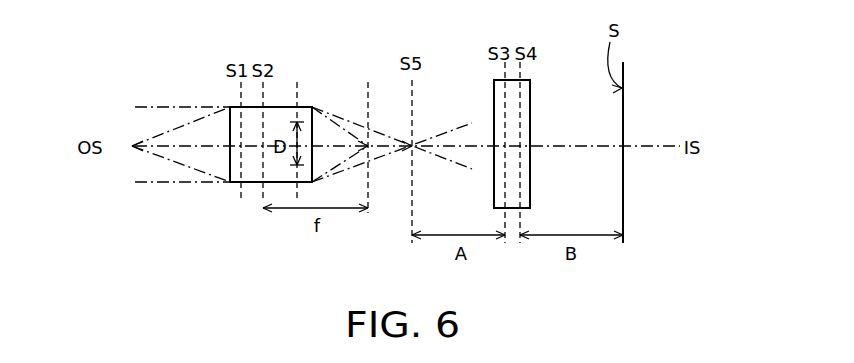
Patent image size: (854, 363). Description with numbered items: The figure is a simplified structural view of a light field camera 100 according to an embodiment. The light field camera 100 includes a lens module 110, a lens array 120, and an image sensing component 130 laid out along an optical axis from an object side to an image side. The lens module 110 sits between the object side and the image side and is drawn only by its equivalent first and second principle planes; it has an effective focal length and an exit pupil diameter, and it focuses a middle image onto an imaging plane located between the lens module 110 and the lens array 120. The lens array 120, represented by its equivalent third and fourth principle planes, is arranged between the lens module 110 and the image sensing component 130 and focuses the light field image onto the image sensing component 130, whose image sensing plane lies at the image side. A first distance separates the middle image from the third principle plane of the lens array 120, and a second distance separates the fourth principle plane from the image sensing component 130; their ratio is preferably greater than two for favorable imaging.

The light field camera 100 is at (663, 307).
The lens module 110 is at (305, 106).
The lens array 120 is at (531, 90).
The image sensing component 130 is at (625, 110).